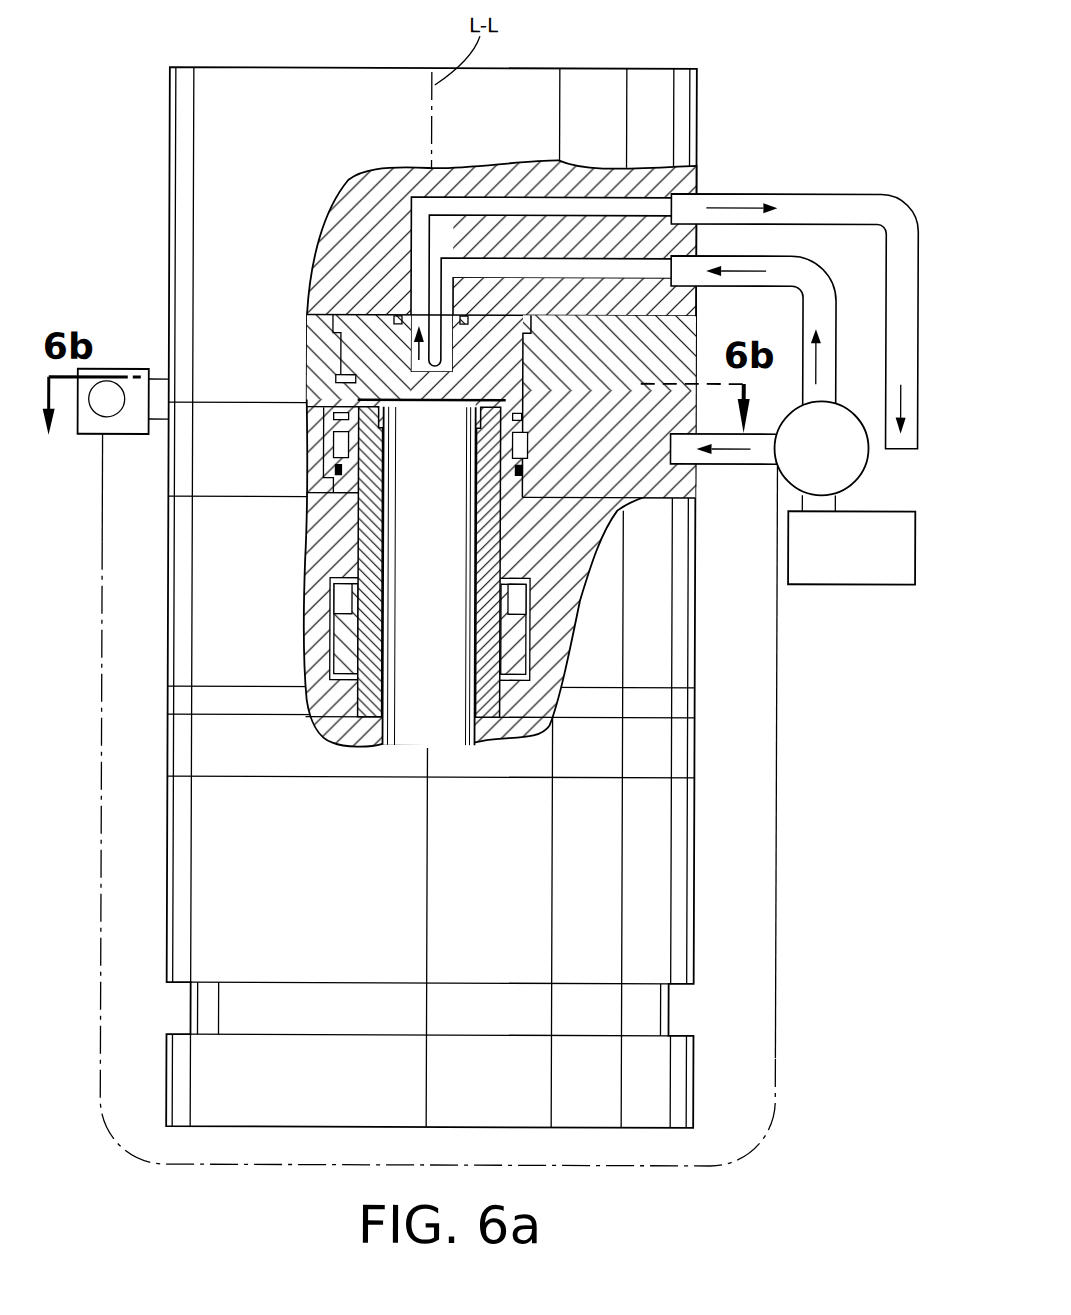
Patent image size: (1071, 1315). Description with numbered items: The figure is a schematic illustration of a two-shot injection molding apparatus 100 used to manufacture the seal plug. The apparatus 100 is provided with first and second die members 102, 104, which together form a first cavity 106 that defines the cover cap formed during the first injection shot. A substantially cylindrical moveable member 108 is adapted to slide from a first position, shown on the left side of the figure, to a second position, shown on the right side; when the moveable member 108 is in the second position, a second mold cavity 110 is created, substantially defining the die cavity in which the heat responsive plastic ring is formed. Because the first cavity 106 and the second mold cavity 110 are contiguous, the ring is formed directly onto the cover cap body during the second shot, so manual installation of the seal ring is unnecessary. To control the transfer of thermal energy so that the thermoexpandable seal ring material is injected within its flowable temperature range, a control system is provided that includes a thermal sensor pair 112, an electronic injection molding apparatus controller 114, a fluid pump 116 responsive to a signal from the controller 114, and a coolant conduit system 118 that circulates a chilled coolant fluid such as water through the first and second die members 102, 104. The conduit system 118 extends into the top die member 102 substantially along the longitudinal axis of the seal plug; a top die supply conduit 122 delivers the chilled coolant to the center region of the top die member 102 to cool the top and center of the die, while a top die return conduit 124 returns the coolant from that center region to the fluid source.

The two-shot injection molding apparatus 100 is at (330, 62).
The first die member 102 is at (365, 310).
The second die member 104 is at (338, 508).
The first cavity 106 is at (312, 363).
The moveable member 108 is at (340, 543).
The second mold cavity 110 is at (523, 480).
The thermal sensor pair 112 is at (340, 378).
The electronic injection molding apparatus controller 114 is at (135, 370).
The fluid pump 116 is at (864, 470).
The coolant conduit system 118 is at (877, 193).
The top die supply conduit 122 is at (650, 273).
The top die return conduit 124 is at (643, 207).